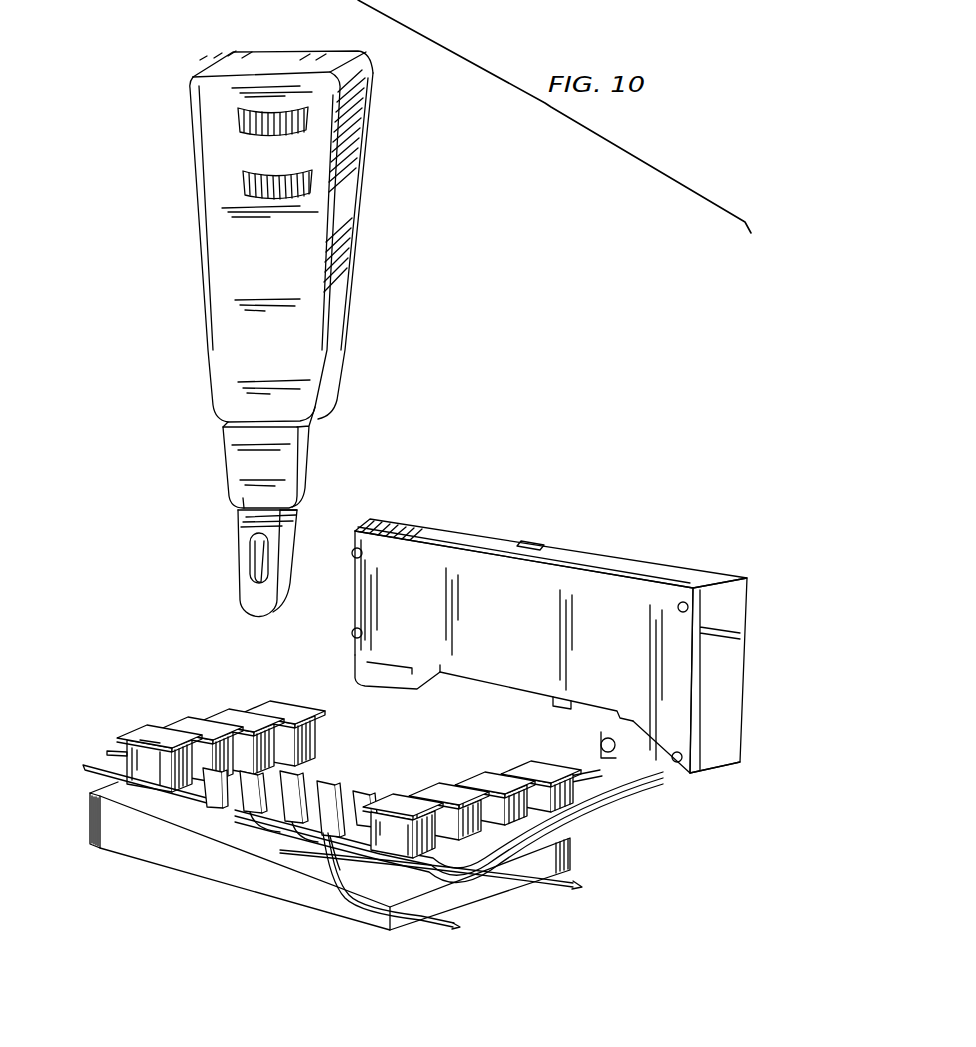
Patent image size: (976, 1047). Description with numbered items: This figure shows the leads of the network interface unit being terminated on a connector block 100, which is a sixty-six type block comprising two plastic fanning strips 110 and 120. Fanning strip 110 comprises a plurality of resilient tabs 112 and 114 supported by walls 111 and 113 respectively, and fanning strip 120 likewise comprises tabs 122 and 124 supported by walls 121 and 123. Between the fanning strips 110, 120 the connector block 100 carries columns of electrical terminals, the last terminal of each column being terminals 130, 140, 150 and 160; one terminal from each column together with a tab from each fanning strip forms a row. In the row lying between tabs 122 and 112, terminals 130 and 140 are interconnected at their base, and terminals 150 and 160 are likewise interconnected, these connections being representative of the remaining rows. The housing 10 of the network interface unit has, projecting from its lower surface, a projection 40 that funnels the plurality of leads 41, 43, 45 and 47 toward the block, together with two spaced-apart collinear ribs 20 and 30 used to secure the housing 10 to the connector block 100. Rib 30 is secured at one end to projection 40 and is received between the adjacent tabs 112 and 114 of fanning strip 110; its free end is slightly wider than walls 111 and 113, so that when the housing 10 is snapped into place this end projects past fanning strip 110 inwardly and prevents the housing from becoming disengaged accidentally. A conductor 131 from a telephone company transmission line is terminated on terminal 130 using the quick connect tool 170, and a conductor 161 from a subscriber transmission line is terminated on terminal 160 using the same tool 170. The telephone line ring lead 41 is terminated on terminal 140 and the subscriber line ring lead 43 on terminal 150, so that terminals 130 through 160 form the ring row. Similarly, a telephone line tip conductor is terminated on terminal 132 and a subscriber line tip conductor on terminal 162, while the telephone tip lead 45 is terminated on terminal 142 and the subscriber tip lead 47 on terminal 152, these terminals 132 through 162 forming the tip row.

The housing 10 is at (640, 567).
The rib 20 is at (357, 663).
The rib 30 is at (557, 707).
The projection 40 is at (663, 757).
The telephone line ring lead 41 is at (637, 793).
The subscriber line ring lead 43 is at (597, 800).
The telephone line tip lead 45 is at (587, 780).
The subscriber line tip lead 47 is at (570, 773).
The connector block 100 is at (123, 840).
The fanning strip 110 is at (507, 769).
The wall 111 is at (400, 822).
The tab 112 is at (385, 805).
The wall 113 is at (452, 805).
The tab 114 is at (420, 791).
The fanning strip 120 is at (253, 706).
The wall 121 is at (133, 765).
The tab 122 is at (137, 740).
The wall 123 is at (190, 767).
The tab 124 is at (188, 728).
The terminal 130 is at (213, 807).
The conductor 131 is at (102, 770).
The terminal 132 is at (247, 767).
The terminal 140 is at (253, 813).
The terminal 142 is at (303, 780).
The terminal 150 is at (303, 820).
The terminal 152 is at (335, 782).
The terminal 160 is at (323, 833).
The conductor 161 is at (427, 922).
The terminal 162 is at (367, 789).
The quick connect tool 170 is at (355, 167).